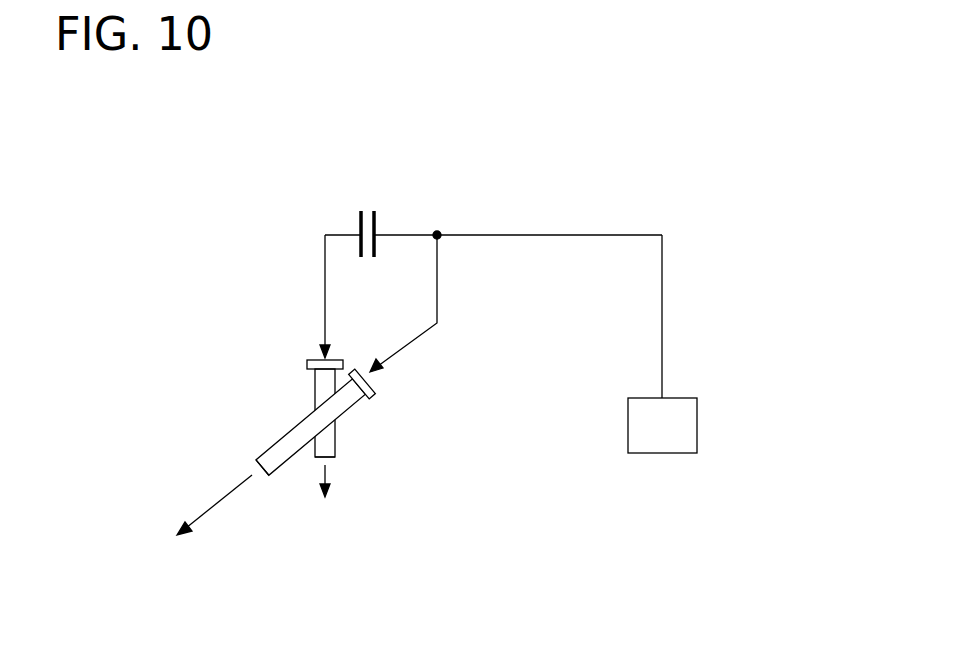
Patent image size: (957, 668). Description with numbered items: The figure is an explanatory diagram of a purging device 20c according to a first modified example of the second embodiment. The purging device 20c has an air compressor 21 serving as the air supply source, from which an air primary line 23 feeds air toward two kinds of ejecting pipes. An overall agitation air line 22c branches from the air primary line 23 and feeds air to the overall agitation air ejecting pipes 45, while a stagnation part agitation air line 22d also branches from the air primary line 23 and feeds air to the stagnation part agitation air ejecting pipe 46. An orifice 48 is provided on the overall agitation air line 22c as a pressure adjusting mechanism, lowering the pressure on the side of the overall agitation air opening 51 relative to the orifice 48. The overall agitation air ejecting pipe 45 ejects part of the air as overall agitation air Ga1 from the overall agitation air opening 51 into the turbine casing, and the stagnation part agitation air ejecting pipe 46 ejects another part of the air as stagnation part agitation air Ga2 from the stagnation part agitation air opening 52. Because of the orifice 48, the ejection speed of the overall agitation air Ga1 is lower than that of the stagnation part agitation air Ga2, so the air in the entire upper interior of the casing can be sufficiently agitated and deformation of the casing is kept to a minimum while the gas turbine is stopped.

The purging device 20c is at (684, 268).
The air compressor 21 is at (697, 422).
The overall agitation air line 22c is at (325, 282).
The stagnation part agitation air line 22d is at (437, 285).
The air primary line 23 is at (602, 235).
The overall agitation air ejecting pipe 45 is at (337, 428).
The stagnation part agitation air ejecting pipe 46 is at (297, 430).
The orifice 48 is at (358, 222).
The overall agitation air opening 51 is at (334, 458).
The stagnation part agitation air opening 52 is at (260, 464).
The overall agitation air Ga1 is at (320, 470).
The stagnation part agitation air Ga2 is at (213, 500).